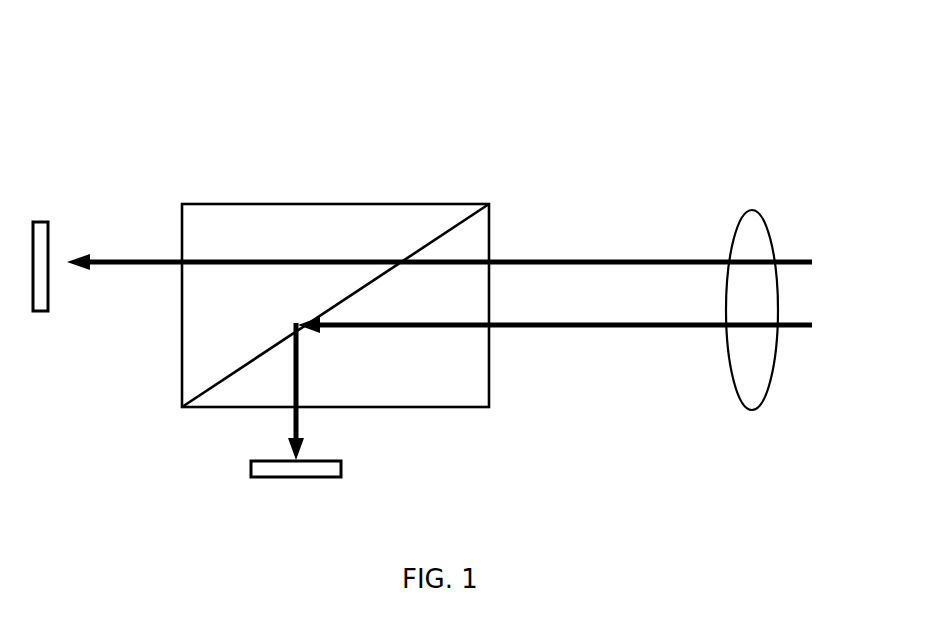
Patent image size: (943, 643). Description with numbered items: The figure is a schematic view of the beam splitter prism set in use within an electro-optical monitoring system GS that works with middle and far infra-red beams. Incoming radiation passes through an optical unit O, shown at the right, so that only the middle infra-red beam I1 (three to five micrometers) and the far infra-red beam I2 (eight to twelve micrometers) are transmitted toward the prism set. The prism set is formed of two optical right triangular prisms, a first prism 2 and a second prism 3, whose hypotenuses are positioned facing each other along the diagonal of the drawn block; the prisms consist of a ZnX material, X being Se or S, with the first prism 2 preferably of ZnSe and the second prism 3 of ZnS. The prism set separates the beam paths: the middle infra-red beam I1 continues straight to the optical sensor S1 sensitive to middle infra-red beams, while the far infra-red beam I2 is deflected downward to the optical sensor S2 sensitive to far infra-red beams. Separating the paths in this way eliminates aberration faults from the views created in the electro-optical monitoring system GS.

The electro-optical monitoring system GS is at (504, 80).
The first prism 2 is at (404, 365).
The second prism 3 is at (255, 245).
The middle infra-red beam I1 is at (591, 261).
The far infra-red beam I2 is at (579, 336).
The optical unit O is at (753, 403).
The optical sensor sensitive to the middle infra-red beams S1 is at (43, 316).
The optical sensor sensitive to the far infra-red beams S2 is at (236, 469).